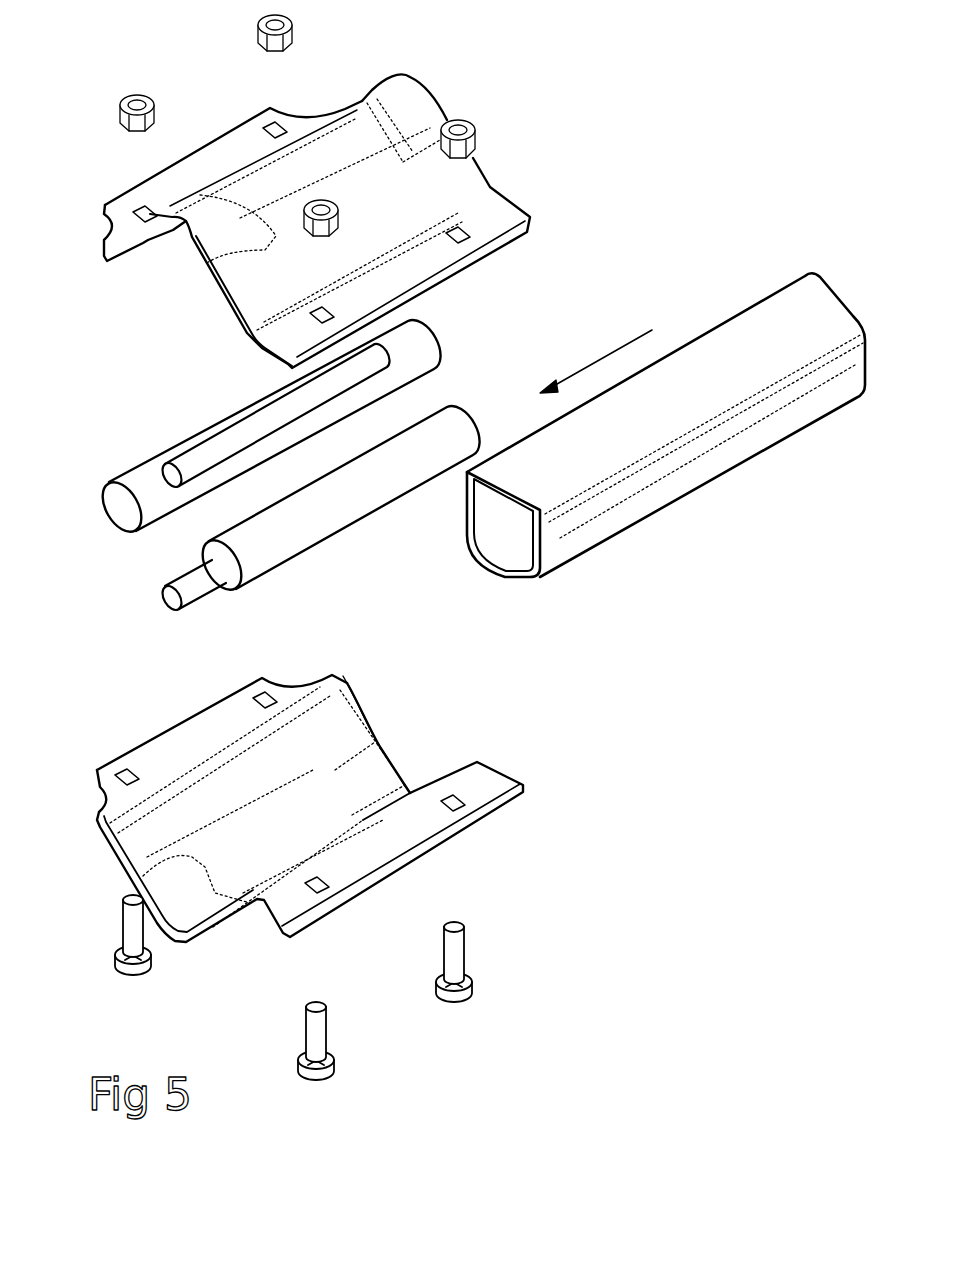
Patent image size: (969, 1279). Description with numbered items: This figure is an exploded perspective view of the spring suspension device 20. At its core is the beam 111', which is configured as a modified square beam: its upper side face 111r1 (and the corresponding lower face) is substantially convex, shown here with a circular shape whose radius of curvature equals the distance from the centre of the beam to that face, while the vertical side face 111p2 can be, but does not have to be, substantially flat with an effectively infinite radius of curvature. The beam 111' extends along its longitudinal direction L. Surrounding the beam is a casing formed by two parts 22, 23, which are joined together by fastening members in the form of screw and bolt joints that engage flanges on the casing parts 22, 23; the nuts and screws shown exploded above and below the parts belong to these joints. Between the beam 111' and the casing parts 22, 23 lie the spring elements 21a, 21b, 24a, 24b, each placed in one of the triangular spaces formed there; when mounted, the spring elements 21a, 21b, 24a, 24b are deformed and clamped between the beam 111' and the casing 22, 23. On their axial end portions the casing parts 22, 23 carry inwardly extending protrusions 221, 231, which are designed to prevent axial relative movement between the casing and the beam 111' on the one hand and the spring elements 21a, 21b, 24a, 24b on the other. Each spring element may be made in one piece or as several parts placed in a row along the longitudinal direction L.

The spring suspension device 20 is at (712, 85).
The casing part 22 is at (325, 184).
The inwardly extending protrusion 221 is at (410, 92).
The casing part 23 is at (308, 808).
The inwardly extending protrusion 231 is at (380, 777).
The spring element 21a is at (222, 438).
The spring element 21b is at (160, 600).
The spring element 24a is at (143, 493).
The spring element 24b is at (297, 510).
The beam 111' is at (666, 416).
The upper side face 111r1 is at (693, 368).
The vertical side face 111p2 is at (730, 427).
The longitudinal direction L is at (596, 361).